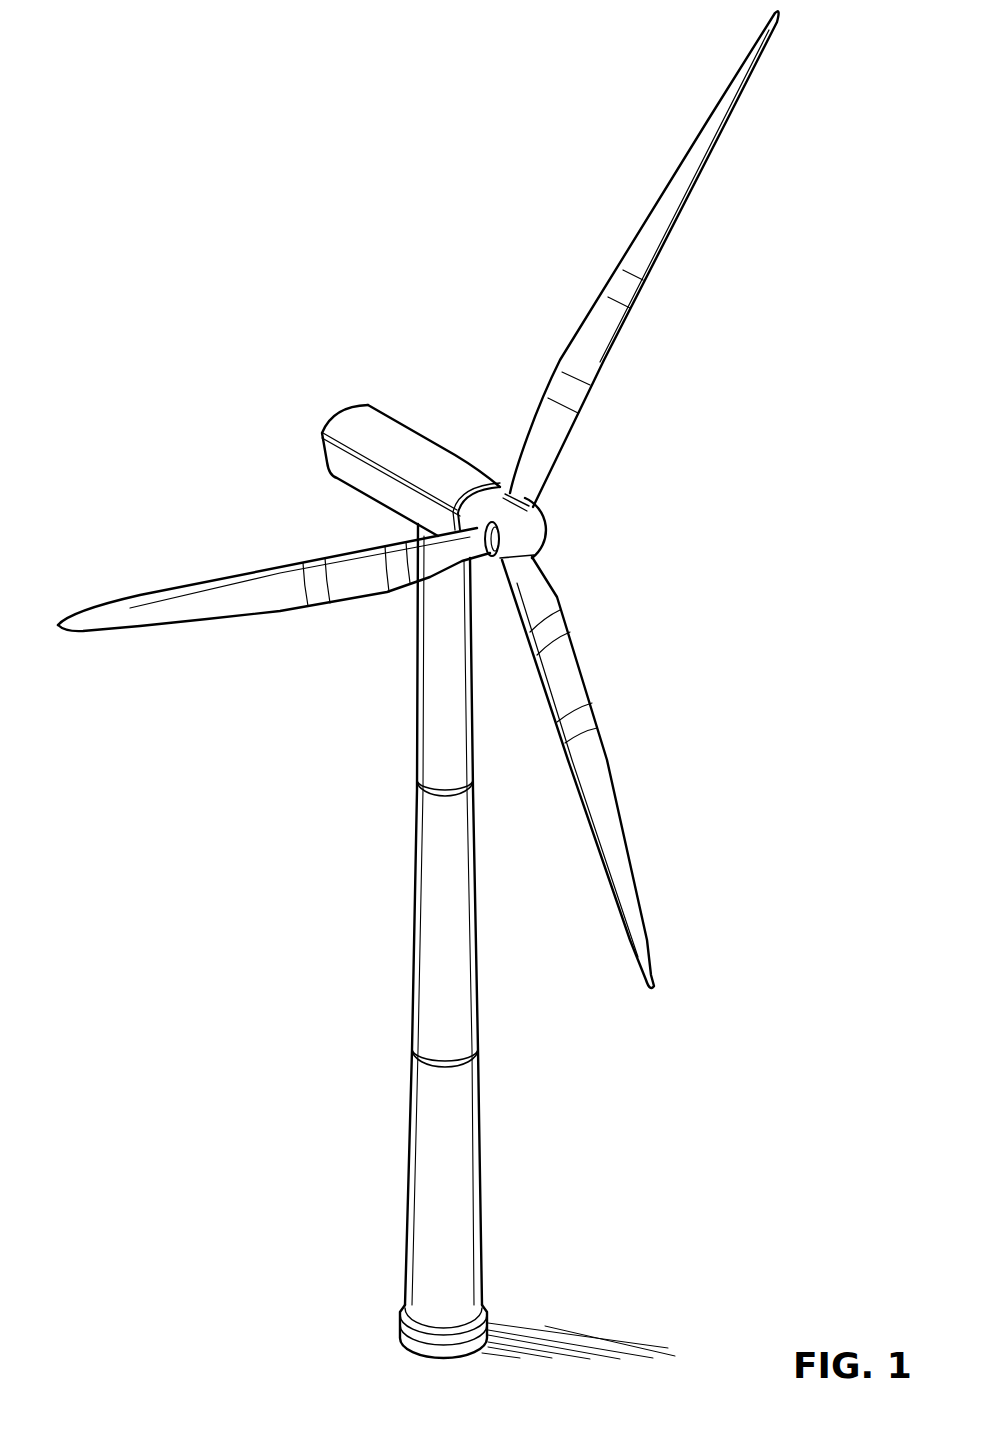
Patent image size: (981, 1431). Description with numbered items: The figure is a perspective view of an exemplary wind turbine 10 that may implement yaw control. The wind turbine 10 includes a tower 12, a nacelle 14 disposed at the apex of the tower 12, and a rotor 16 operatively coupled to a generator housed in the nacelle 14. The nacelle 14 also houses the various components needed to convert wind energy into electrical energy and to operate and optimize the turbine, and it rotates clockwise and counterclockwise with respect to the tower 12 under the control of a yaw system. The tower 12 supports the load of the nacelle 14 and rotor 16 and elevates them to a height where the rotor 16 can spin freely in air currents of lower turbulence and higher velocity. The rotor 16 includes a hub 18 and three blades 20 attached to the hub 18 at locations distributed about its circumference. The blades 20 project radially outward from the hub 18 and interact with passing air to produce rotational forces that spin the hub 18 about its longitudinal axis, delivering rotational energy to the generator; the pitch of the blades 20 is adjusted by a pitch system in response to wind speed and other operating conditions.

The wind turbine 10 is at (224, 296).
The tower 12 is at (477, 898).
The nacelle 14 is at (453, 449).
The rotor 16 is at (550, 543).
The hub 18 is at (538, 525).
The blades 20 is at (640, 240).